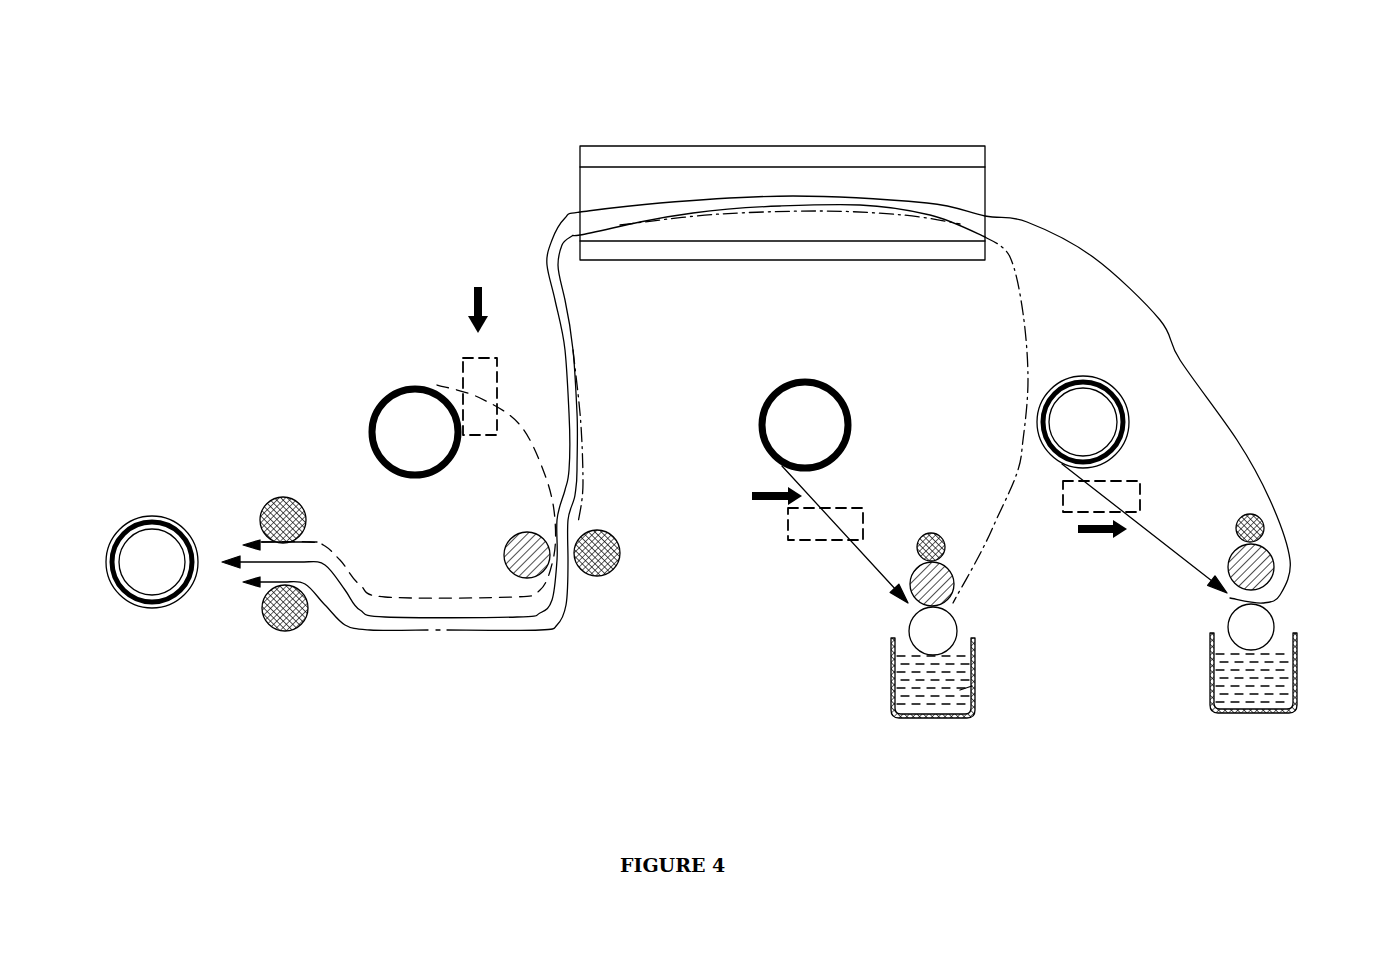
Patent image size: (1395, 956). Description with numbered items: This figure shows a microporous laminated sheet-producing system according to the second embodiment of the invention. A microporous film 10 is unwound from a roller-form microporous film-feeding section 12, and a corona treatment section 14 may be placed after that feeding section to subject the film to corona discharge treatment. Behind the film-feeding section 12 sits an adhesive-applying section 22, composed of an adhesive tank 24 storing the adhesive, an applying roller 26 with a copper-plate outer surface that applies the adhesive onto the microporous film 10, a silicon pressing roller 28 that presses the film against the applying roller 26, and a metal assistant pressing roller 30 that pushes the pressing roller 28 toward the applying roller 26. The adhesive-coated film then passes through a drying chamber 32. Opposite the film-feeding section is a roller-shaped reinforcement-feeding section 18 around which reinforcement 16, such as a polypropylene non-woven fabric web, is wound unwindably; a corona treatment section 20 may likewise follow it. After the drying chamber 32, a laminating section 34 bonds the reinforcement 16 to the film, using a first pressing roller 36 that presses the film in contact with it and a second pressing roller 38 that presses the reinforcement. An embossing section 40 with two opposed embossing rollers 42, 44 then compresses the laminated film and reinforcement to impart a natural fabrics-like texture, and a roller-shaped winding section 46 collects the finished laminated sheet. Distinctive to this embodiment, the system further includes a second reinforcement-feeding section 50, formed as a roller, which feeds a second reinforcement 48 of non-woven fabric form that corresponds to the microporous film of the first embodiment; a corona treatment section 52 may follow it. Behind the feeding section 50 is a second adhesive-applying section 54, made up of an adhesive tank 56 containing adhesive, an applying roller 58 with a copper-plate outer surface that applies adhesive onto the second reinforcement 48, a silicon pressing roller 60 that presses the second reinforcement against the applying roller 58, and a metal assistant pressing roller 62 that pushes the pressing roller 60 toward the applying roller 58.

The microporous film 10 is at (1158, 548).
The microporous film-feeding section 12 is at (1110, 422).
The surface treatment unit 14 is at (1064, 512).
The reinforcement 16 is at (538, 442).
The reinforcement-feeding section 18 is at (383, 400).
The surface treatment unit 20 is at (463, 360).
The adhesive-applying section 22 is at (1278, 588).
The adhesive tank 24 is at (1272, 688).
The applying roller 26 is at (1274, 620).
The pressing roller 28 is at (1232, 556).
The assistant pressing roller 30 is at (1235, 516).
The drying chamber 32 is at (947, 143).
The laminating section 34 is at (538, 562).
The first pressing roller 36 is at (598, 577).
The second pressing roller 38 is at (508, 540).
The embossing section 40 is at (267, 566).
The embossing roller 42 is at (286, 631).
The embossing roller 44 is at (285, 497).
The winding section 46 is at (147, 608).
The second reinforcement 48 is at (862, 556).
The second reinforcement-feeding section 50 is at (829, 384).
The surface treatment unit 52 is at (797, 541).
The second adhesive-applying section 54 is at (928, 567).
The adhesive tank 56 is at (960, 690).
The applying roller 58 is at (957, 624).
The pressing roller 60 is at (953, 578).
The assistant pressing roller 62 is at (925, 533).